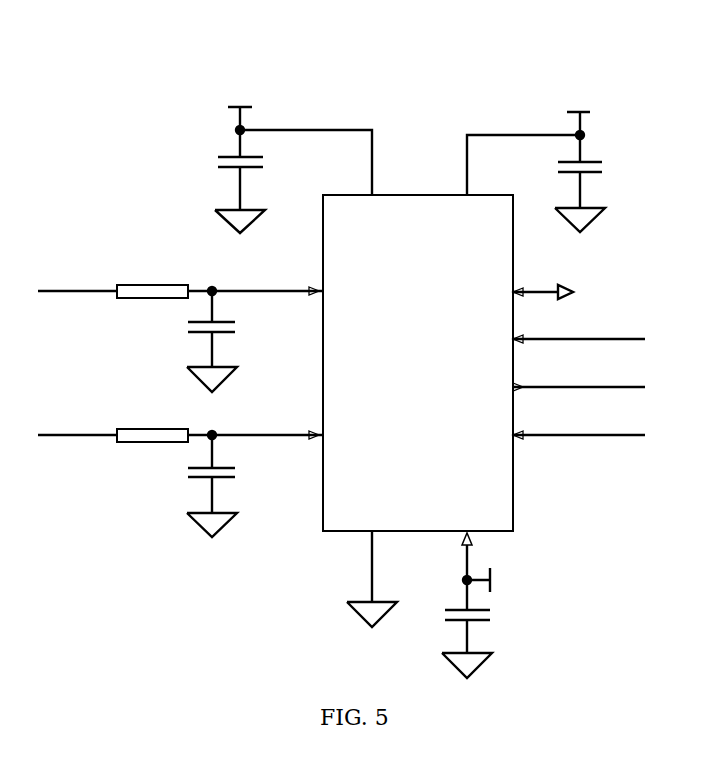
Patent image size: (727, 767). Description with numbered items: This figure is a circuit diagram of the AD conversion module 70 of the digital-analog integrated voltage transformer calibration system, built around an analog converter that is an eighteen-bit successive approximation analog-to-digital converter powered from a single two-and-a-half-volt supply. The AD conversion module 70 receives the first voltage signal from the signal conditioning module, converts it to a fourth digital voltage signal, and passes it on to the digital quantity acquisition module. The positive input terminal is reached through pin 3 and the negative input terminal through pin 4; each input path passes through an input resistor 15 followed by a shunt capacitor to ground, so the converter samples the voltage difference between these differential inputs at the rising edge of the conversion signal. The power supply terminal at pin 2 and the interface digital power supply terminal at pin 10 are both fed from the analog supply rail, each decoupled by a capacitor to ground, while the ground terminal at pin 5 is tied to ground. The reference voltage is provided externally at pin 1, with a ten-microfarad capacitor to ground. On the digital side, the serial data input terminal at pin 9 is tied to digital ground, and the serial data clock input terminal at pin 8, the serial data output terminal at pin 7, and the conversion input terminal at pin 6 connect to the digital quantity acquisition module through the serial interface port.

The AD conversion module 70 is at (460, 72).
The input resistor 15 is at (152, 345).
The Vref pin 1 is at (470, 571).
The VDD pin 2 is at (300, 151).
The IN+ pin 3 is at (255, 284).
The IN- pin 4 is at (255, 428).
The GND pin 5 is at (372, 579).
The CNV pin 6 is at (579, 428).
The SDO pin 7 is at (579, 380).
The SCK pin 8 is at (579, 332).
The SDI pin 9 is at (543, 287).
The VIO pin 10 is at (519, 153).